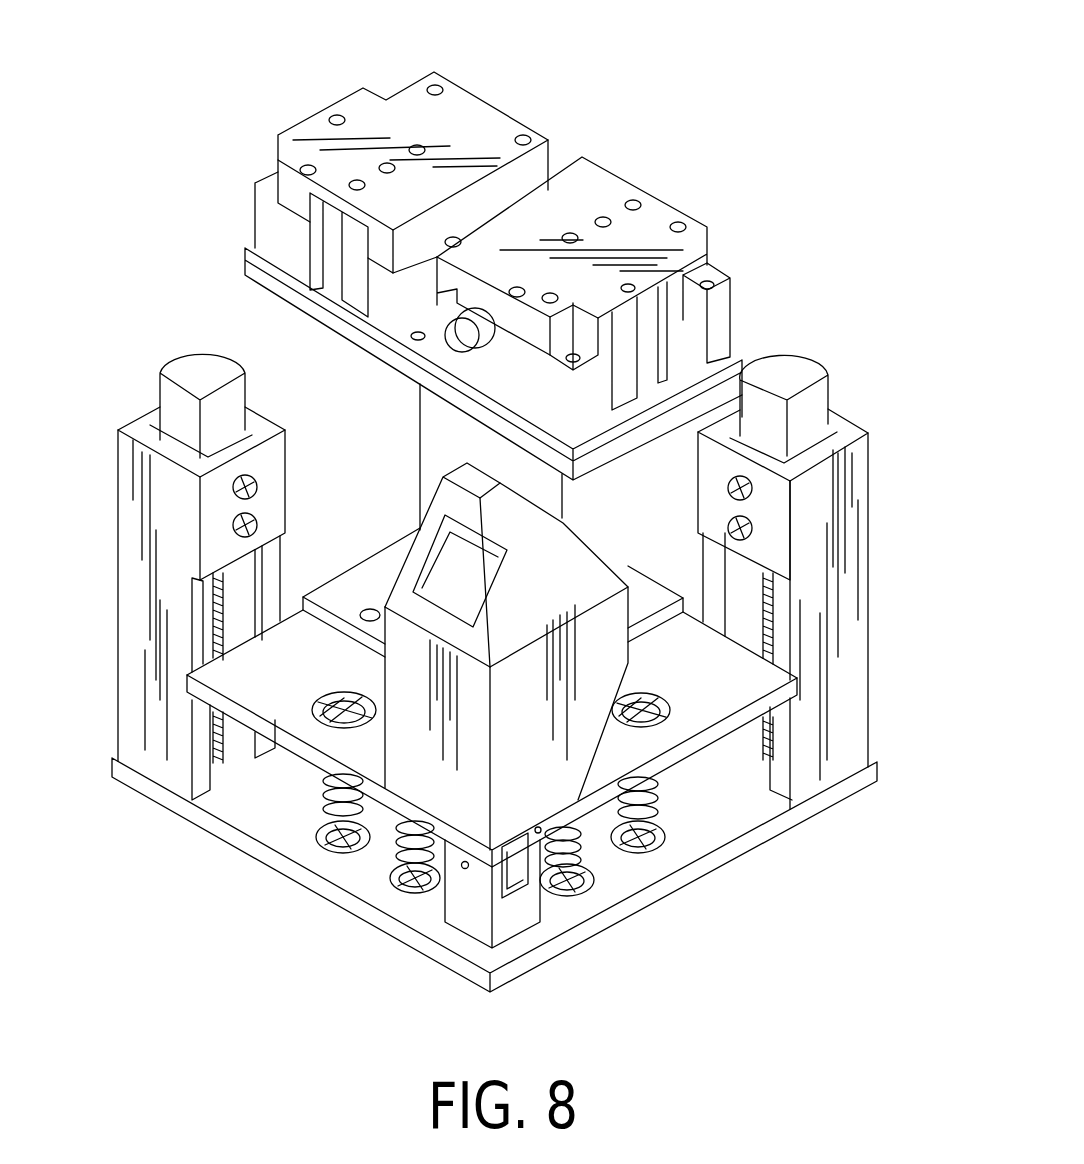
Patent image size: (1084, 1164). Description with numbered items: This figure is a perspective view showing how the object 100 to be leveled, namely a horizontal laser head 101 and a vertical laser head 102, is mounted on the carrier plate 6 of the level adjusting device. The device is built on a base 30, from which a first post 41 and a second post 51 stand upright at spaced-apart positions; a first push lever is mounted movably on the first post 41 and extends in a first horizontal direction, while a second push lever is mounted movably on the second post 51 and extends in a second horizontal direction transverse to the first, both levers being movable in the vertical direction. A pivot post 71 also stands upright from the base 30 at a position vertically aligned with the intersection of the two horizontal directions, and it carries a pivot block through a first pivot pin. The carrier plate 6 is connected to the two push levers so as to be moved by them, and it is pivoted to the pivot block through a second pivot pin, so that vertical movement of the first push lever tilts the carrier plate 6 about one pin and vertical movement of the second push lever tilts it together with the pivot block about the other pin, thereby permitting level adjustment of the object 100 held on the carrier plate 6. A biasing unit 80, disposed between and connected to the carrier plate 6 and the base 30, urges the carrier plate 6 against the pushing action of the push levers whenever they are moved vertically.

The object 100 is at (537, 425).
The horizontal laser head 101 is at (655, 203).
The vertical laser head 102 is at (583, 566).
The second post 51 is at (115, 516).
The first post 41 is at (872, 522).
The carrier plate 6 is at (297, 762).
The base 30 is at (252, 860).
The biasing unit 80 is at (395, 838).
The pivot post 71 is at (514, 938).